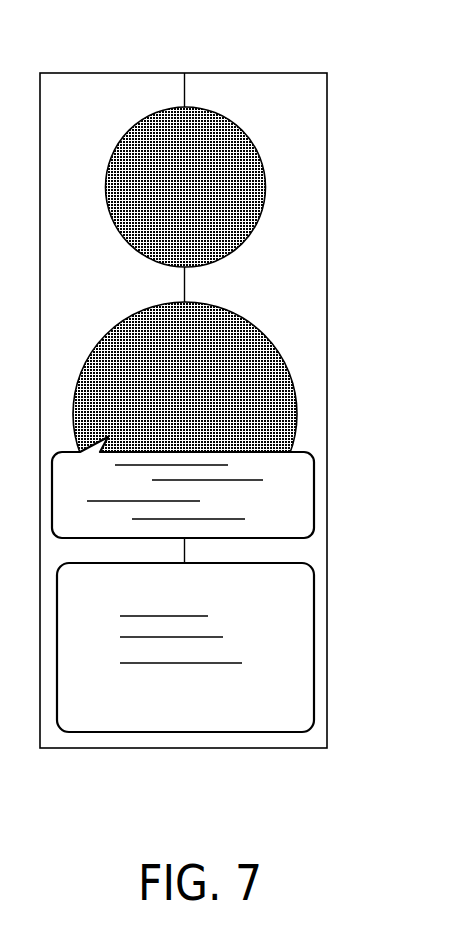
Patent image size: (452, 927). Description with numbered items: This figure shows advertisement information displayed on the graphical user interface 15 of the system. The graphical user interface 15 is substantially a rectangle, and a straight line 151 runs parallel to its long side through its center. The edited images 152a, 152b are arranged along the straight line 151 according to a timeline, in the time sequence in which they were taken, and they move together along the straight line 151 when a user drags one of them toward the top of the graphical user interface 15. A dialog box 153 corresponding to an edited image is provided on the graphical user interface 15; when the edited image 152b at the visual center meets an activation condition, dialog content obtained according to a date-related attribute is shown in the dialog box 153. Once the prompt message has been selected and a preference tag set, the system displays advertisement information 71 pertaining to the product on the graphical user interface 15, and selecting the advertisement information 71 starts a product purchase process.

The graphical user interface 15 is at (243, 73).
The straight line 151 is at (185, 296).
The edited image 152a is at (265, 178).
The edited image 152b is at (265, 399).
The dialog box 153 is at (314, 497).
The advertisement information 71 is at (314, 644).